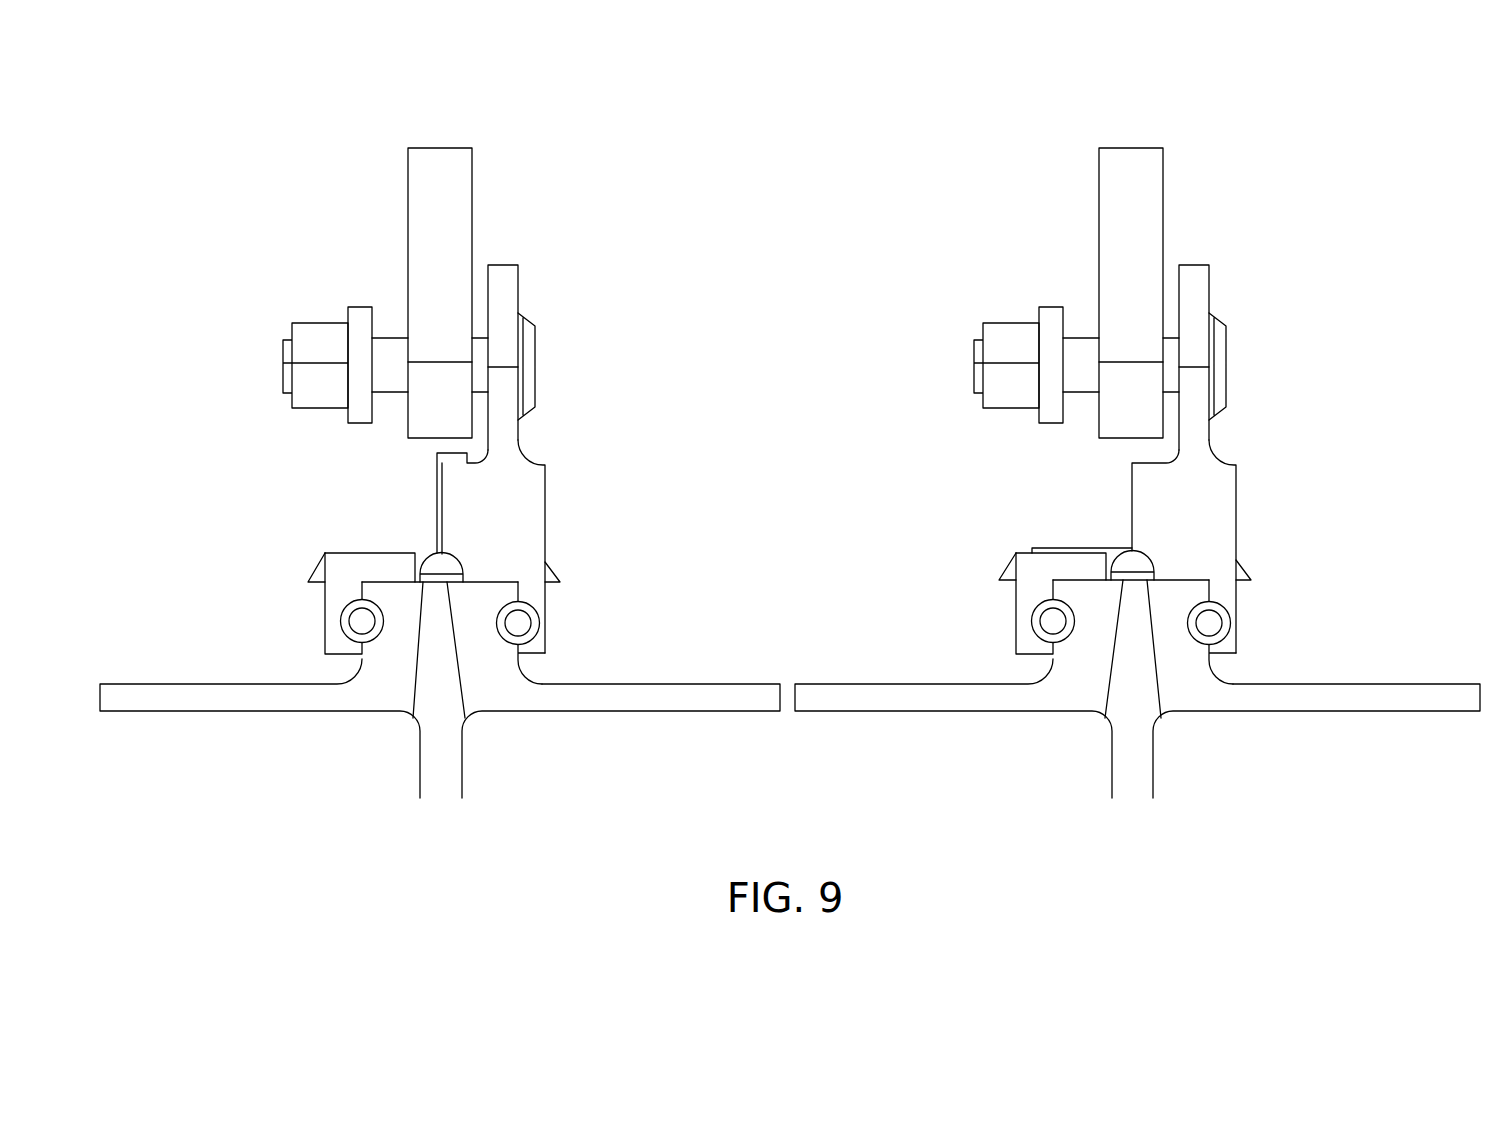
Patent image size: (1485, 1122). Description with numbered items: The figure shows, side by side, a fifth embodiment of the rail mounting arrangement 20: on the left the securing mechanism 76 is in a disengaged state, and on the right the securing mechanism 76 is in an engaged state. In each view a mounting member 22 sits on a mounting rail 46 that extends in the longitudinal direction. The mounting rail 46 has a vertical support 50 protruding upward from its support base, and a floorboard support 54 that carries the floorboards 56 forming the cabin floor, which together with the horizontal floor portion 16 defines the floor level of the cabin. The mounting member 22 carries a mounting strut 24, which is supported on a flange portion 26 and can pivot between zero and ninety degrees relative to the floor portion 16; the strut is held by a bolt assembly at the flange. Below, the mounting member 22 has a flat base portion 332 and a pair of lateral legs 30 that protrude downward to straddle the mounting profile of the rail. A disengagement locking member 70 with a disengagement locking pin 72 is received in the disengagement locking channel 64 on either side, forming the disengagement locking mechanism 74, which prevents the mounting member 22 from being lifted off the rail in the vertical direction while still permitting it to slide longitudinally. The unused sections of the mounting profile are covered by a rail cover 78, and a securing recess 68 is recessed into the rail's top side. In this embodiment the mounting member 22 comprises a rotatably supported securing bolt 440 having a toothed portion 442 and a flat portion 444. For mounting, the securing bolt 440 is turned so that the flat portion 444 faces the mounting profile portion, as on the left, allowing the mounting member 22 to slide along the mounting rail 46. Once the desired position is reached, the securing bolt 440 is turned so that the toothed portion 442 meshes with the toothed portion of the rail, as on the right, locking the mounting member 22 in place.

The horizontal floor portion 16 is at (391, 126).
The rail mounting arrangement 20 is at (434, 136).
The mounting strut 24 is at (443, 187).
The flange portion 26 is at (503, 292).
The mounting member 22 is at (512, 407).
The securing mechanism 76 is at (527, 443).
The toothed portion 442 is at (451, 552).
The flat base portion 332 is at (472, 572).
The securing bolt 440 is at (437, 550).
The disengagement locking member 70 is at (338, 566).
The disengagement locking mechanism 74 is at (300, 626).
The floorboards 56 is at (298, 580).
The rail cover 78 is at (555, 579).
The lateral legs 30 is at (532, 590).
The disengagement locking channel 64 is at (527, 640).
The floorboard support 54 is at (713, 697).
The vertical support 50 is at (443, 775).
The disengagement locking pin 72 is at (522, 622).
The securing recess 68 is at (412, 720).
The flat portion 444 is at (466, 722).
The mounting rail 46 is at (262, 760).